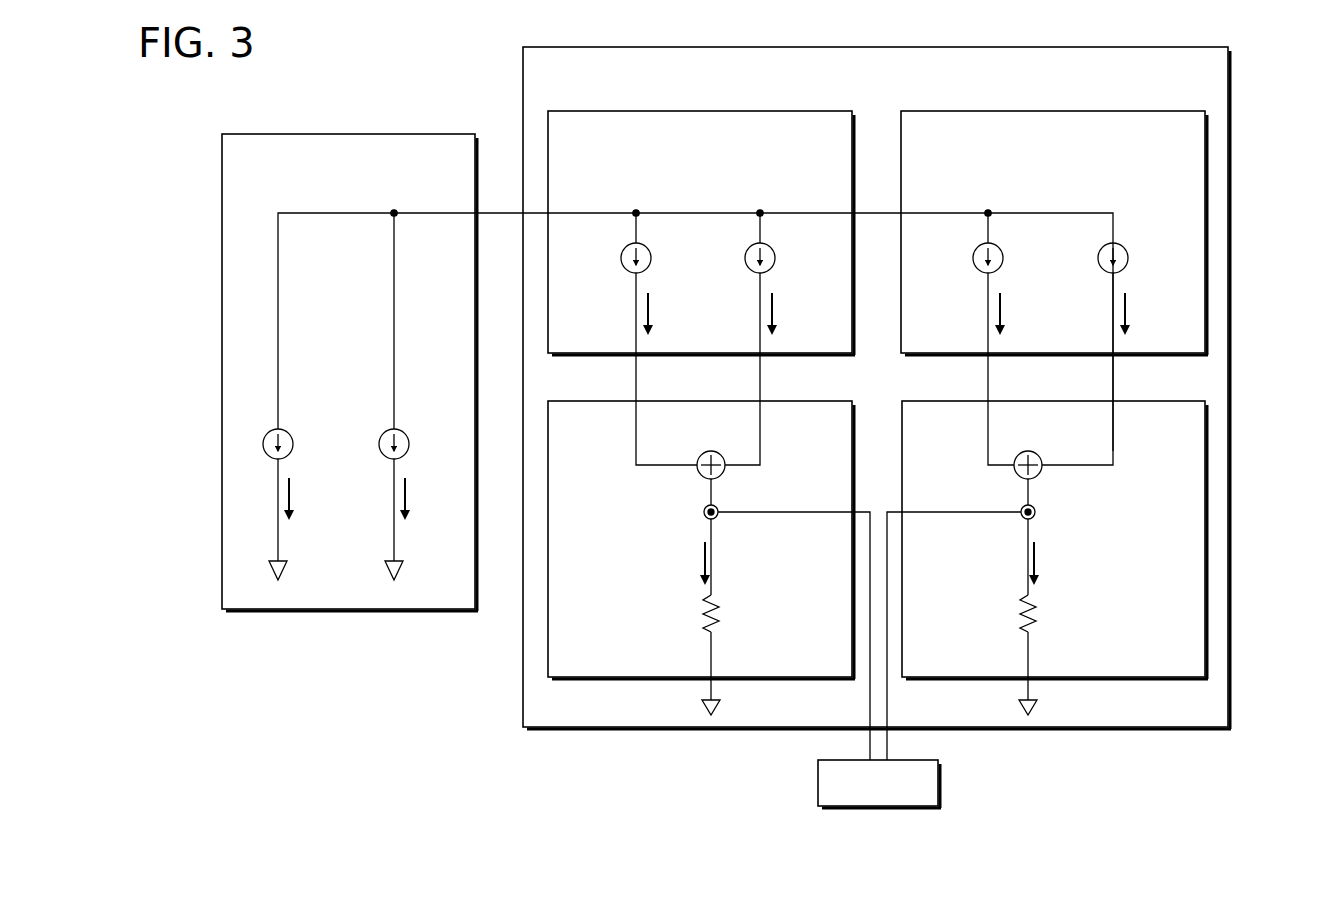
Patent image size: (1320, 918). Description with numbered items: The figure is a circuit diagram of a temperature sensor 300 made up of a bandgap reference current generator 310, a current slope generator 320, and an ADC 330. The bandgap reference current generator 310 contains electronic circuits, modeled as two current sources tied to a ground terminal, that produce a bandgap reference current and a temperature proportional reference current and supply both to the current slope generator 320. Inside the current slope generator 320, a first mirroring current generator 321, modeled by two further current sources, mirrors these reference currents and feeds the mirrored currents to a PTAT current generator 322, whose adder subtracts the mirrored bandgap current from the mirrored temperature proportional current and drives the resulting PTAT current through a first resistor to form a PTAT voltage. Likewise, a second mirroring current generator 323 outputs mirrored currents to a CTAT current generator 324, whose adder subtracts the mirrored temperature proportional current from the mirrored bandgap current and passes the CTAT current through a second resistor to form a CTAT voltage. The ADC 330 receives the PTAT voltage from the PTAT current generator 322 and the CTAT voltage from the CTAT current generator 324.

The temperature sensor 300 is at (1281, 42).
The bandgap reference current generator 310 is at (393, 134).
The current slope generator 320 is at (1147, 47).
The first mirroring current generator 321 is at (768, 111).
The PTAT current generator 322 is at (770, 401).
The second mirroring current generator 323 is at (1122, 111).
The CTAT current generator 324 is at (1120, 401).
The ADC 330 is at (940, 781).